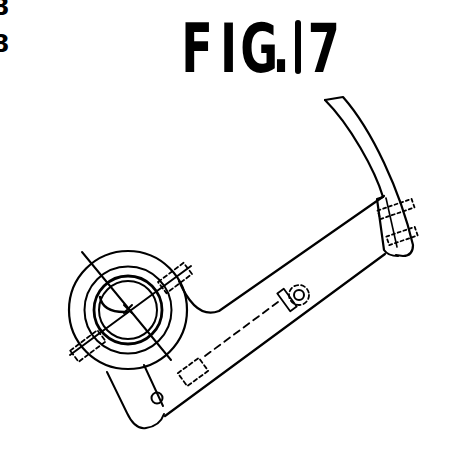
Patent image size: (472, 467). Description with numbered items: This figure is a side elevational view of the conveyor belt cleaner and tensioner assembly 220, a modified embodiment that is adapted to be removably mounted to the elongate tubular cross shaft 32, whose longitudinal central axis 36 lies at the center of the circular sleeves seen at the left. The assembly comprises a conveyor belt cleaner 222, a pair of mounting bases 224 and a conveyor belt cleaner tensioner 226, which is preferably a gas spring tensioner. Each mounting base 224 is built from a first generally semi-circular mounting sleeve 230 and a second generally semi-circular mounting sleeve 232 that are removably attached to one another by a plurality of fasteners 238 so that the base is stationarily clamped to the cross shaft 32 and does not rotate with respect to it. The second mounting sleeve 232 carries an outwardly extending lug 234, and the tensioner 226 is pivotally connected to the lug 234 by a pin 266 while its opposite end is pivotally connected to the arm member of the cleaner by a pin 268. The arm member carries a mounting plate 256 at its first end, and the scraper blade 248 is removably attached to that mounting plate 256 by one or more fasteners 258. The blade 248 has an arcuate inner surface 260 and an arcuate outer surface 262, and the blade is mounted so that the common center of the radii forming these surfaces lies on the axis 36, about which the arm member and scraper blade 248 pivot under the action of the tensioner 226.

The cross shaft 32 is at (125, 268).
The longitudinal central axis 36 is at (80, 278).
The conveyor belt cleaner and tensioner assembly 220 is at (2, 192).
The conveyor belt cleaner 222 is at (353, 292).
The mounting base 224 is at (100, 382).
The conveyor belt cleaner tensioner 226 is at (252, 362).
The first mounting sleeve 230 is at (72, 310).
The second mounting sleeve 232 is at (108, 362).
The lug 234 is at (125, 404).
The fasteners 238 is at (176, 270).
The scraper blade 248 is at (392, 146).
The mounting plate 256 is at (397, 254).
The fasteners 258 is at (406, 201).
The arcuate inner surface 260 is at (350, 128).
The arcuate outer surface 262 is at (352, 110).
The pin 266 is at (158, 406).
The pin 268 is at (308, 296).